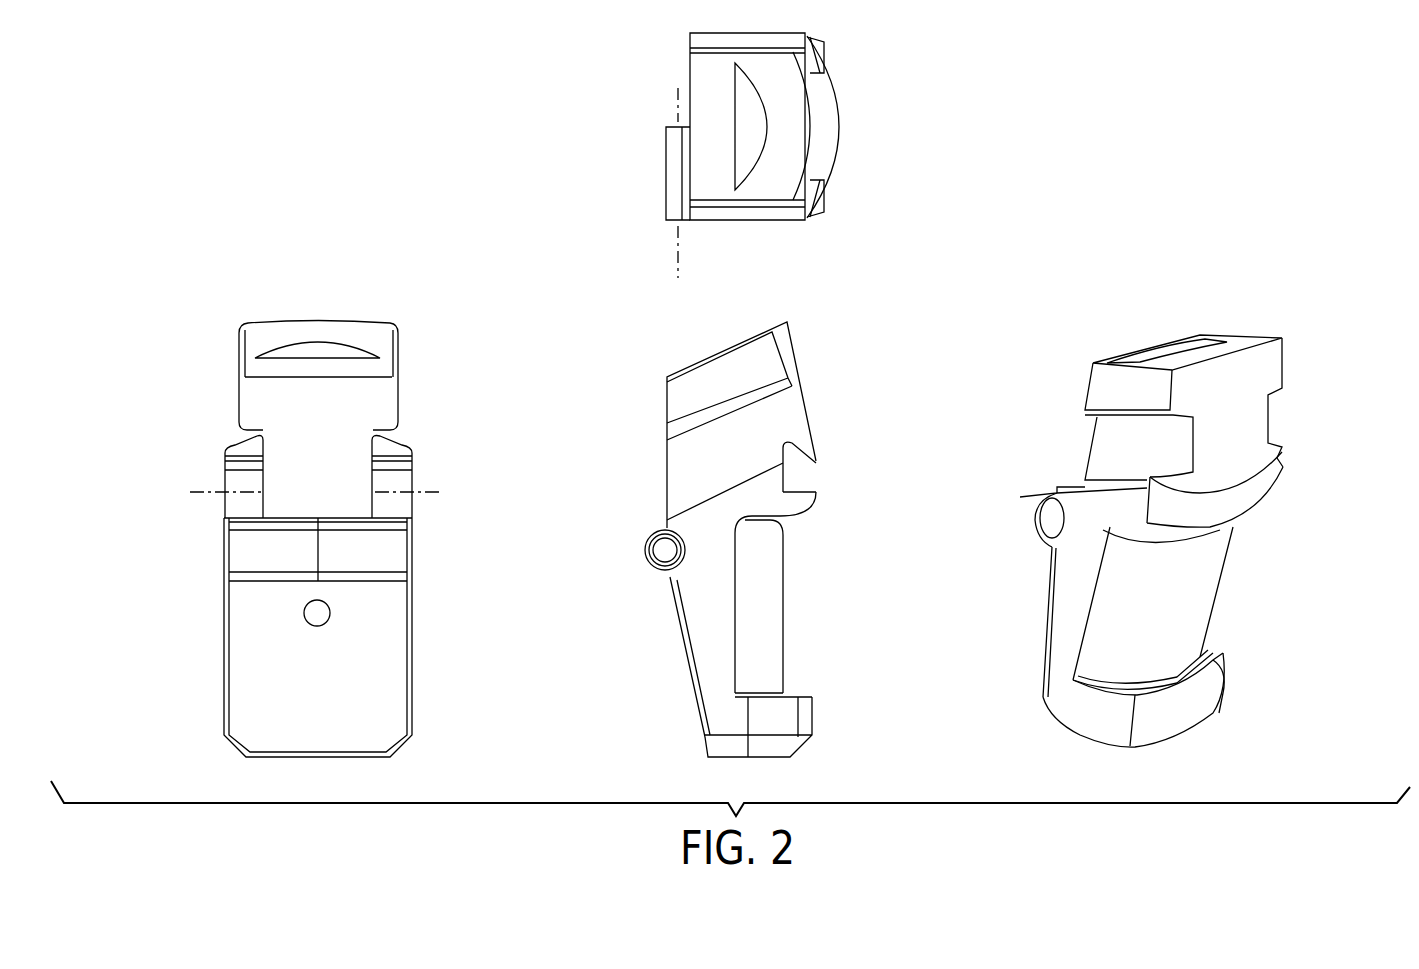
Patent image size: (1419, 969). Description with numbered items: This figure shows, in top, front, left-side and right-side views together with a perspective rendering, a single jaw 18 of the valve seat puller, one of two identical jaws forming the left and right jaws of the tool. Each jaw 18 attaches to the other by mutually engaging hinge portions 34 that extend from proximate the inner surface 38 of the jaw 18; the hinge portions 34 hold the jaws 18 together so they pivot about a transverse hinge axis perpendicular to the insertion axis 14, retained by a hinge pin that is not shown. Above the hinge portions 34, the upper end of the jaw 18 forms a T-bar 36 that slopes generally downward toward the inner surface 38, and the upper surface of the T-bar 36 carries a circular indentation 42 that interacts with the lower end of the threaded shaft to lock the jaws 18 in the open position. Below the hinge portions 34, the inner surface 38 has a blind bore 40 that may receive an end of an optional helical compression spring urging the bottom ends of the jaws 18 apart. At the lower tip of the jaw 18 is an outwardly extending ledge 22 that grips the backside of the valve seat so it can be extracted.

The insertion axis 14 is at (676, 254).
The jaw 18 is at (848, 119).
The ledge 22 is at (807, 698).
The hinge portion 34 is at (226, 503).
The T-bar 36 is at (397, 404).
The inner surface 38 is at (650, 530).
The blind bore 40 is at (328, 620).
The circular indentation 42 is at (748, 138).